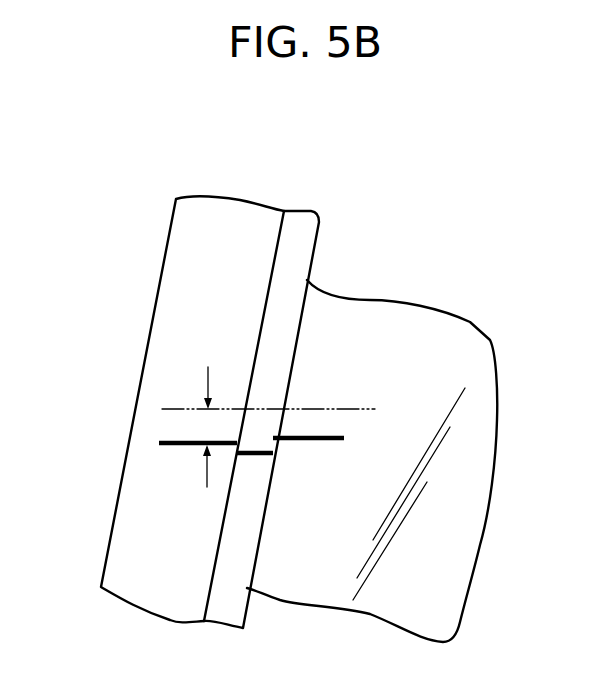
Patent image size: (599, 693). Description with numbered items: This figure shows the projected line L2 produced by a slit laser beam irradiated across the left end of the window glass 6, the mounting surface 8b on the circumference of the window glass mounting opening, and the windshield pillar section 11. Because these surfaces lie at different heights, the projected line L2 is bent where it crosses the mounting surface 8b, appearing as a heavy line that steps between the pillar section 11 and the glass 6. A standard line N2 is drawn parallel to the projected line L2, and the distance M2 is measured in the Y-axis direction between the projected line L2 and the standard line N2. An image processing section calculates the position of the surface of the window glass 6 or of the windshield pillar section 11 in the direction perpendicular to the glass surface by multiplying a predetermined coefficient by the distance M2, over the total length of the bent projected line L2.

The window glass 6 is at (425, 325).
The windshield pillar section 11 is at (170, 318).
The mounting surface 8b is at (297, 259).
The standard line N2 is at (343, 409).
The projected line L2 is at (195, 445).
The distance M2 is at (207, 415).